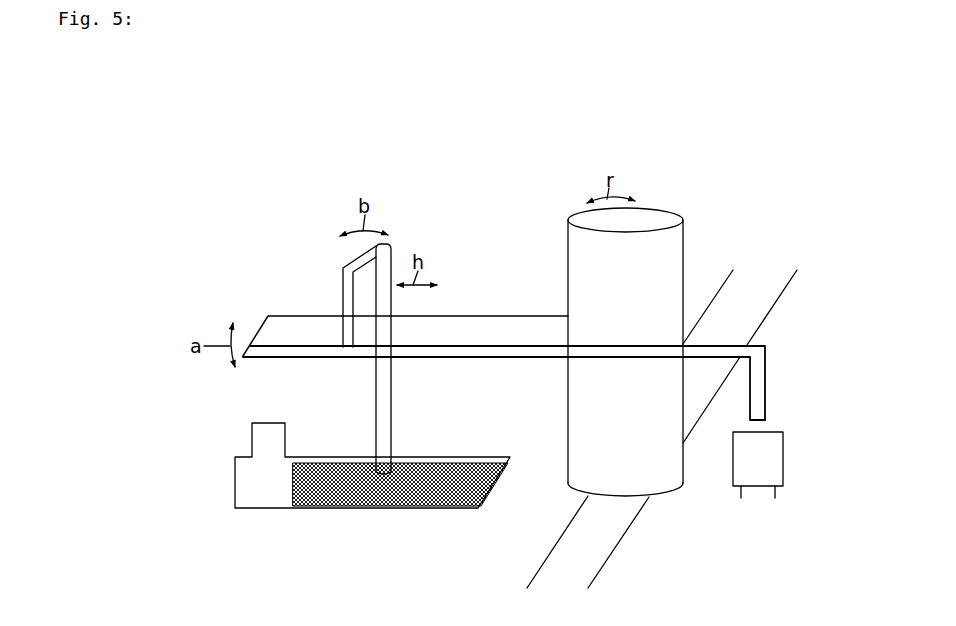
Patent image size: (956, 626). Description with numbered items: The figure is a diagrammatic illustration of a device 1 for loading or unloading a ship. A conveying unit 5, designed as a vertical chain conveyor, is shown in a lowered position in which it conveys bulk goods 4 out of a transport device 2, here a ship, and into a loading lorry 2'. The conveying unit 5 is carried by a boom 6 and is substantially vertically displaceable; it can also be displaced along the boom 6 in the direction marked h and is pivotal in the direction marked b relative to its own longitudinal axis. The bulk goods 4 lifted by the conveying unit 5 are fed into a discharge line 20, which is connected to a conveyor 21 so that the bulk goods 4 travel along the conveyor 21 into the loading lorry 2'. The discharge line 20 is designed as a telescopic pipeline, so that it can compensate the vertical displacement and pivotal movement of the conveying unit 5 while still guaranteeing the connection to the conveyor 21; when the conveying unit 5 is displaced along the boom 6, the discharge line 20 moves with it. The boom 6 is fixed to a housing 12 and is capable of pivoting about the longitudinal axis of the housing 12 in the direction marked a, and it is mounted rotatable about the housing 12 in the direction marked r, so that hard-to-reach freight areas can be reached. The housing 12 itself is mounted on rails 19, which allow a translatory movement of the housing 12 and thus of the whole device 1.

The device 1 is at (468, 138).
The transport device 2 is at (372, 456).
The loading lorry 2' is at (780, 460).
The bulk goods 4 is at (347, 494).
The conveying unit 5 is at (392, 379).
The boom 6 is at (262, 323).
The housing 12 is at (568, 263).
The rails 19 is at (600, 570).
The discharge line 20 is at (343, 283).
The conveyor 21 is at (301, 355).